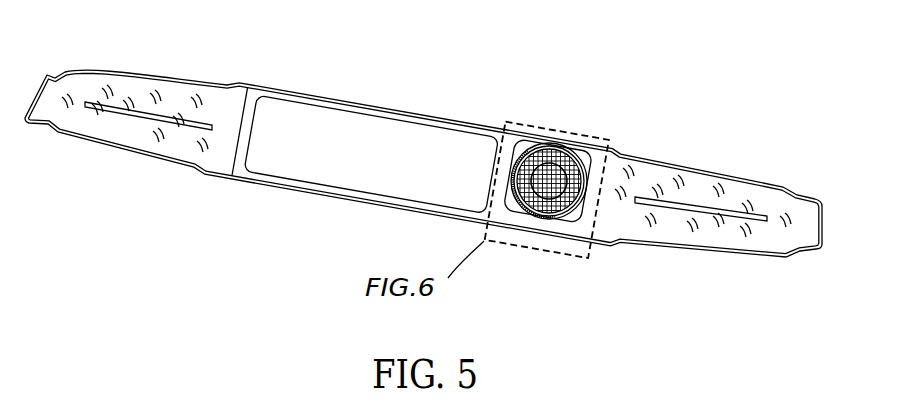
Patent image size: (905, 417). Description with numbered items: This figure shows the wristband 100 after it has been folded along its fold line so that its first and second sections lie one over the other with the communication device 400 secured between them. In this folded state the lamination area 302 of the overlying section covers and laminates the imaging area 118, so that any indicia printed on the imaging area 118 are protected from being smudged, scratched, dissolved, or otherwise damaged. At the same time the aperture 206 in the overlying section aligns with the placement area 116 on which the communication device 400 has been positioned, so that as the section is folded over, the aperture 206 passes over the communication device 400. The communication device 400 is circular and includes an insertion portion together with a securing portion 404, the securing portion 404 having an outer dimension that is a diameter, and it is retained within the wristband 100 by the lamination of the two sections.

The wristband 100 is at (217, 113).
The placement area 116 is at (579, 143).
The imaging area 118 is at (397, 172).
The aperture 206 is at (507, 210).
The lamination area 302 is at (506, 131).
The communication device 400 is at (531, 205).
The securing portion 404 is at (586, 185).